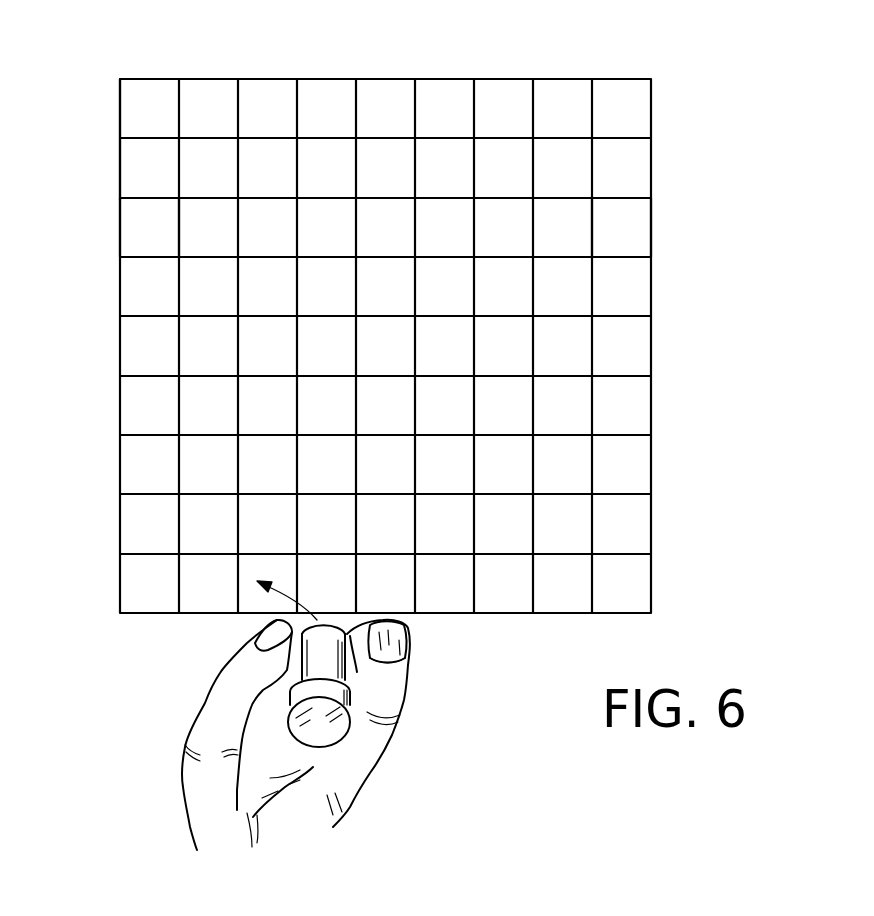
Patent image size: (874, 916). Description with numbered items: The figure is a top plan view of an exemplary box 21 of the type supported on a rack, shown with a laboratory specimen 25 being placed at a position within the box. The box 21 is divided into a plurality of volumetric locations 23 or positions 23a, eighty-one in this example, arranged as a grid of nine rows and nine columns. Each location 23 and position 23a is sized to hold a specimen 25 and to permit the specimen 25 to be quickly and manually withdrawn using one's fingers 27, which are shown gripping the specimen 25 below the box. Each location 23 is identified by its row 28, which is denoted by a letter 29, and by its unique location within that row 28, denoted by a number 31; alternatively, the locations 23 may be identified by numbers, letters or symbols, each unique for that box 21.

The box 21 is at (653, 295).
The volumetric location 23 is at (133, 225).
The position 23a is at (635, 230).
The specimen 25 is at (328, 670).
The fingers 27 is at (223, 697).
The row 28 is at (120, 100).
The letter 29 is at (141, 106).
The number 31 is at (278, 217).